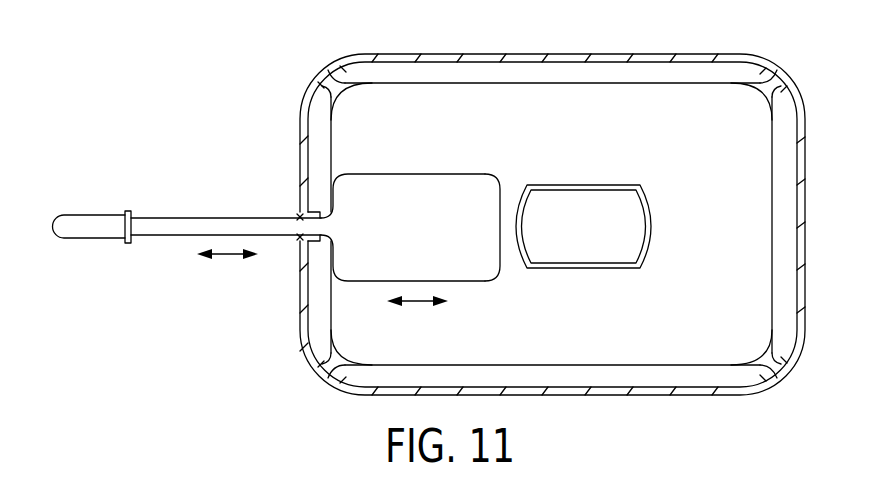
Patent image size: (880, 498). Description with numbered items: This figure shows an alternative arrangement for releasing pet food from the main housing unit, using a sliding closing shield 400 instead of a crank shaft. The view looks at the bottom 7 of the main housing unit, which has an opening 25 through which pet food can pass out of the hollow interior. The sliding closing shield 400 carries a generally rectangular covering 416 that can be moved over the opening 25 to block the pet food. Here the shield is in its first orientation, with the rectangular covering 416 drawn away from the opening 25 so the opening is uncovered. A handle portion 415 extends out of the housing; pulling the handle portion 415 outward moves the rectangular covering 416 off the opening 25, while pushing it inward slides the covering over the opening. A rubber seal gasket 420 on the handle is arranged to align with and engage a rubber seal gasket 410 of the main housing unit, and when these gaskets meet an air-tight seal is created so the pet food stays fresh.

The bottom 7 is at (323, 79).
The opening 25 is at (581, 244).
The sliding closing shield 400 is at (416, 229).
The rubber seal gasket 410 is at (298, 217).
The handle portion 415 is at (76, 222).
The rectangular covering 416 is at (477, 262).
The rubber seal gasket 420 is at (133, 212).